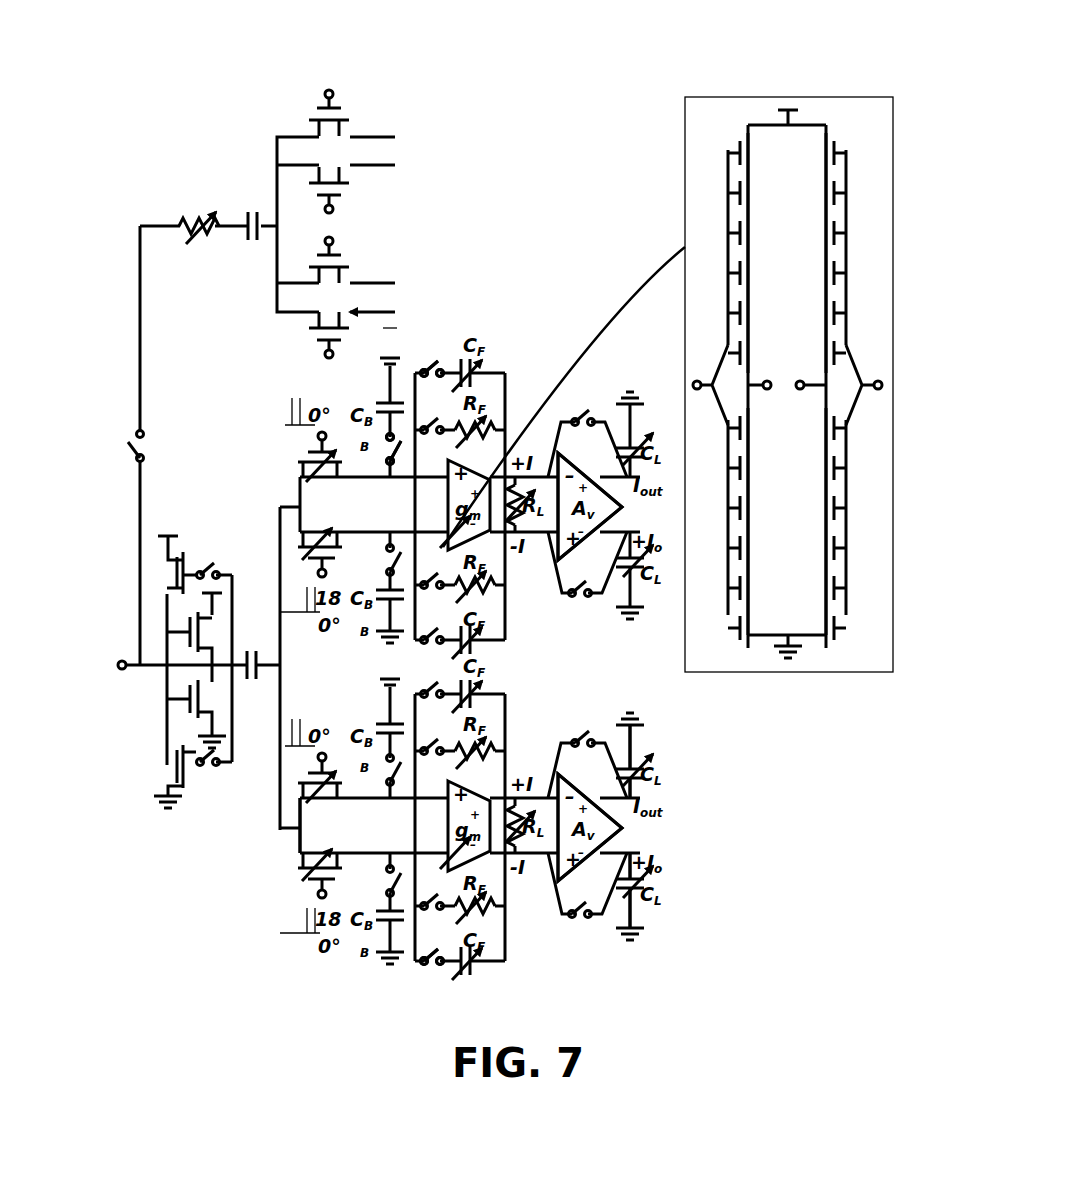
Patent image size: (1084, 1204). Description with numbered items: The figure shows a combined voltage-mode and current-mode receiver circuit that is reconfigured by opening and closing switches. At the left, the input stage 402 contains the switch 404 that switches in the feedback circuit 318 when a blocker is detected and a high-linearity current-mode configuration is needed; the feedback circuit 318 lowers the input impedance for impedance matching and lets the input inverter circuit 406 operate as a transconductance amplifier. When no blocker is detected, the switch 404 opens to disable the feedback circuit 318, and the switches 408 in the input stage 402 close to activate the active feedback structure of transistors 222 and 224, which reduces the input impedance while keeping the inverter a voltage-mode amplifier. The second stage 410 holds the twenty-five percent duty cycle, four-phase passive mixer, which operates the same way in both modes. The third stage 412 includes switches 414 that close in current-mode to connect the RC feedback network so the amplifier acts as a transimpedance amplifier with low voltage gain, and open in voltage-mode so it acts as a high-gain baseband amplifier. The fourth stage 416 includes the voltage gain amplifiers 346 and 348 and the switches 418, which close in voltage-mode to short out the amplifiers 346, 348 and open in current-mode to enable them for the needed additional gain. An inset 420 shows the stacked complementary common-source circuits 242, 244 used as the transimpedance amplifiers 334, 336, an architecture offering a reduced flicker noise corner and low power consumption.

The feedback circuit 318 is at (280, 88).
The switch 404 is at (160, 412).
The input stage 402 is at (175, 855).
The transistor 222 is at (170, 568).
The transistor 224 is at (162, 771).
The input inverter circuit 406 is at (207, 515).
The switches 408 is at (212, 780).
The second stage 410 is at (275, 900).
The third stage 412 is at (538, 285).
The switches 414 is at (444, 345).
The switches 418 is at (585, 400).
The voltage gain amplifier 346 is at (626, 512).
The voltage gain amplifier 348 is at (626, 833).
The fourth stage 416 is at (618, 980).
The amplifier schematic inset 420 is at (668, 115).
The stacked complementary common-source circuit 242 is at (728, 97).
The stacked complementary common-source circuit 244 is at (836, 249).
The transimpedance amplifier 334 is at (777, 529).
The transimpedance amplifier 336 is at (836, 524).